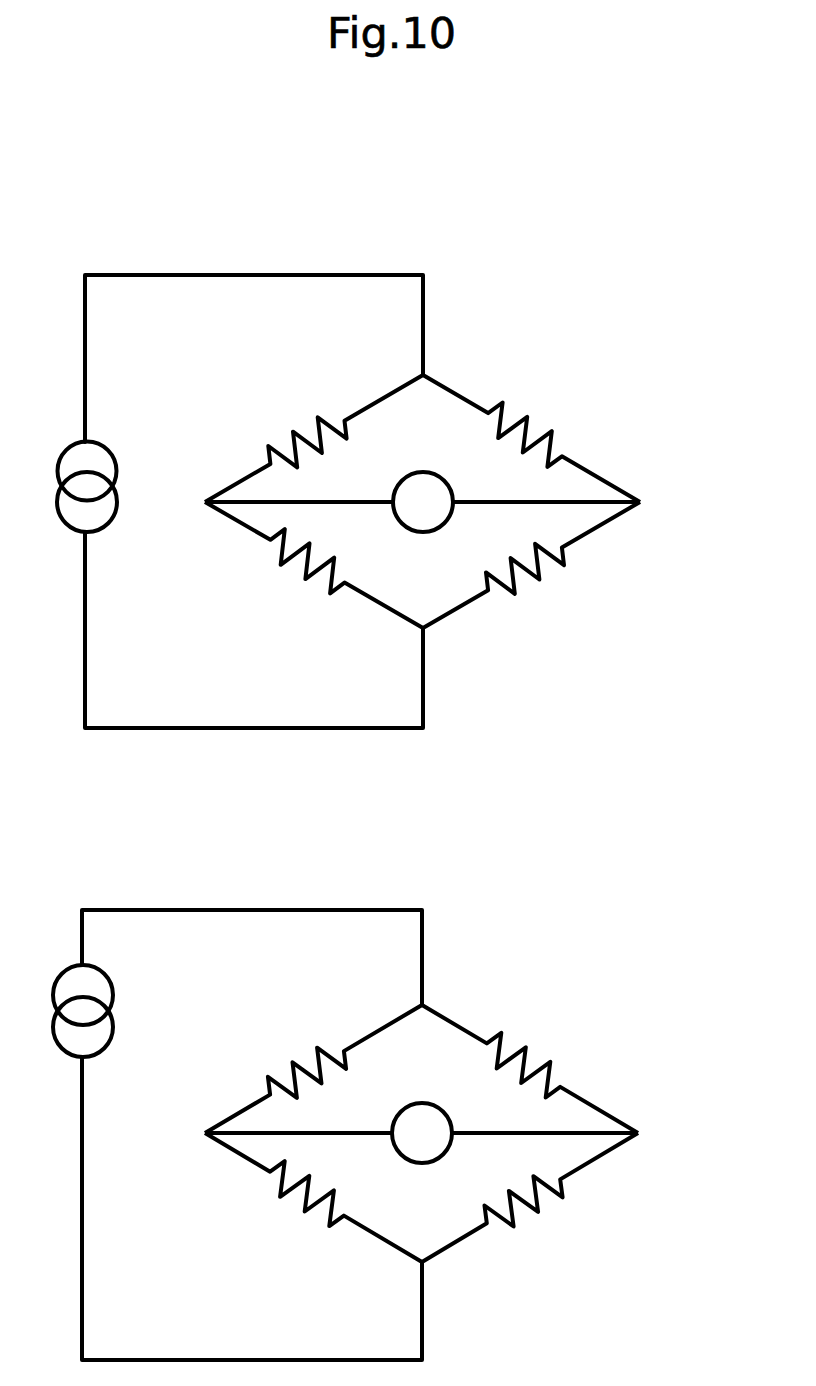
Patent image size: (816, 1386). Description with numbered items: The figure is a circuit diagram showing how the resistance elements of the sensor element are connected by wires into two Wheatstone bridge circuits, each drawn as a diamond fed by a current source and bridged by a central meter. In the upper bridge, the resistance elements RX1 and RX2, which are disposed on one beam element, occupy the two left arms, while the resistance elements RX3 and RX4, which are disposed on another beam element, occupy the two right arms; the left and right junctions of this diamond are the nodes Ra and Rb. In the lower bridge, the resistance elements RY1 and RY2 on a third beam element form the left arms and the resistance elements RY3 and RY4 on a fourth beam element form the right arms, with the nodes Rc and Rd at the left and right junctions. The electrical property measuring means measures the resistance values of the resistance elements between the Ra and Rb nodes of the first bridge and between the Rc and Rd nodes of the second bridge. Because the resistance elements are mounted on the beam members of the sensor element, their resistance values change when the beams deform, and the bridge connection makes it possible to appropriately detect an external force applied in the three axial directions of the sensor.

The resistance element RX1 is at (314, 437).
The resistance element RX2 is at (314, 574).
The resistance element RX3 is at (531, 437).
The resistance element RX4 is at (531, 573).
The resistance element RY1 is at (313, 1069).
The resistance element RY2 is at (313, 1206).
The resistance element RY3 is at (530, 1069).
The resistance element RY4 is at (530, 1206).
The measurement node Ra is at (205, 502).
The measurement node Rb is at (640, 502).
The measurement node Rc is at (205, 1133).
The measurement node Rd is at (638, 1133).